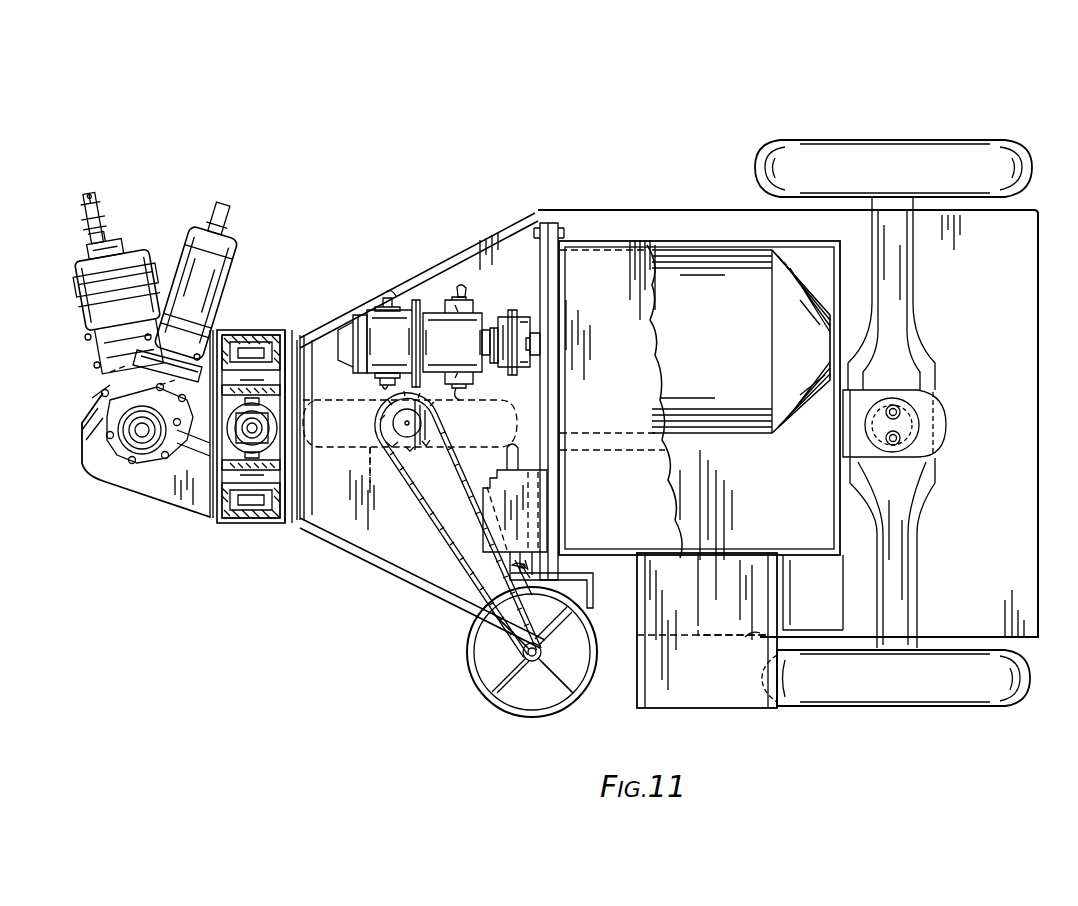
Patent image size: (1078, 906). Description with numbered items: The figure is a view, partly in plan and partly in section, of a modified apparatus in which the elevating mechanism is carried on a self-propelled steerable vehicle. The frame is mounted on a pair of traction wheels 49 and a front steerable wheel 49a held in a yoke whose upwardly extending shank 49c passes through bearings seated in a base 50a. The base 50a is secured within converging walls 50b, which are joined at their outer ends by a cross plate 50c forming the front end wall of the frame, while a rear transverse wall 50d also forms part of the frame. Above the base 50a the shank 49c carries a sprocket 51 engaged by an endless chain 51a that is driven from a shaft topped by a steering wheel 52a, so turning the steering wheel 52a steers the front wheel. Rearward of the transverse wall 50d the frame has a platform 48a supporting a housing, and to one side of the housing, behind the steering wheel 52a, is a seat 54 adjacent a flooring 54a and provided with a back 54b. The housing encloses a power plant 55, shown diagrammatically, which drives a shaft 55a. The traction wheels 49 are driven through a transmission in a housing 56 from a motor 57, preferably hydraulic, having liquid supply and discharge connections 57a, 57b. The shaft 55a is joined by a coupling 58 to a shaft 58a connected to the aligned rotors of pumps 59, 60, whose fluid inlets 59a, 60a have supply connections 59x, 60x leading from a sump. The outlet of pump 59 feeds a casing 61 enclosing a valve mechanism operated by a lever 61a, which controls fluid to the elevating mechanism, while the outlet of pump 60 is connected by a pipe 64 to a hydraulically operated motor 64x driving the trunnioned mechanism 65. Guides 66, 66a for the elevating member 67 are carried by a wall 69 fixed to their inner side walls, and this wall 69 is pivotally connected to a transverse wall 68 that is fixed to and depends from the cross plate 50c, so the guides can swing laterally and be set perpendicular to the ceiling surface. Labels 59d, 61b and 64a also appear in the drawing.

The platform 48a is at (694, 226).
The traction wheels 49 is at (965, 155).
The front steerable wheel 49a is at (405, 470).
The shank 49c is at (412, 414).
The base 50a is at (372, 538).
The converging walls 50b is at (518, 226).
The cross plate 50c is at (304, 492).
The rear transverse wall 50d is at (548, 410).
The sprocket 51 is at (388, 426).
The endless chain 51a is at (428, 518).
The steering wheel 52a is at (475, 676).
The seat 54 is at (725, 698).
The flooring 54a is at (640, 600).
The back 54b is at (748, 636).
The power plant 55 is at (699, 420).
The shaft 55a is at (542, 330).
The transmission housing 56 is at (922, 482).
The motor 57 is at (934, 422).
The liquid supply connection 57a is at (908, 444).
The discharge connection 57b is at (905, 405).
The coupling 58 is at (506, 316).
The shaft 58a is at (490, 366).
The pump 59 is at (434, 312).
The fluid inlet 59a is at (444, 325).
The valve outlet 59d is at (447, 367).
The supply connection 59x is at (466, 292).
The pump 60 is at (342, 345).
The fluid inlet 60a is at (378, 372).
The supply connection 60x is at (383, 306).
The casing 61 is at (466, 396).
The lever 61a is at (540, 490).
The bracket arm 61b is at (596, 594).
The pipe 64 is at (385, 400).
The spark plug 64a is at (95, 232).
The hydraulically operated motor 64x is at (73, 305).
The mechanism 65 is at (144, 422).
The guide 66 is at (256, 522).
The guide 66a is at (235, 522).
The elevating member 67 is at (215, 480).
The transverse wall 68 is at (290, 330).
The wall 69 is at (302, 520).